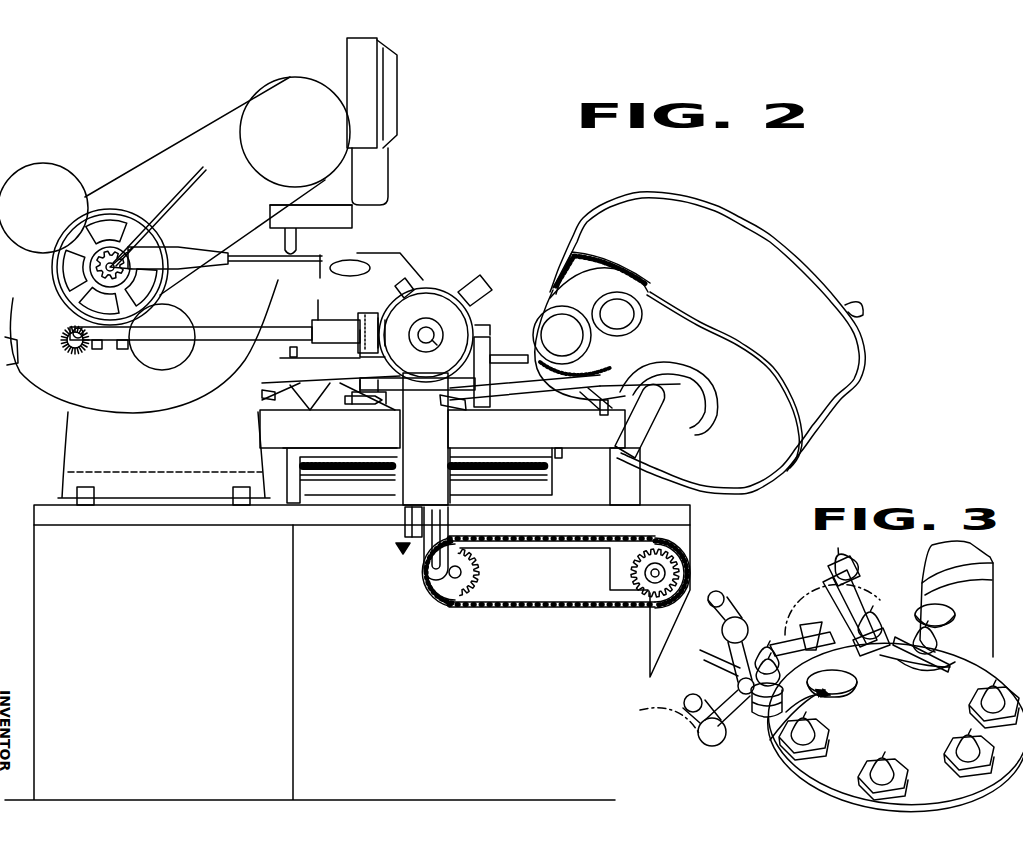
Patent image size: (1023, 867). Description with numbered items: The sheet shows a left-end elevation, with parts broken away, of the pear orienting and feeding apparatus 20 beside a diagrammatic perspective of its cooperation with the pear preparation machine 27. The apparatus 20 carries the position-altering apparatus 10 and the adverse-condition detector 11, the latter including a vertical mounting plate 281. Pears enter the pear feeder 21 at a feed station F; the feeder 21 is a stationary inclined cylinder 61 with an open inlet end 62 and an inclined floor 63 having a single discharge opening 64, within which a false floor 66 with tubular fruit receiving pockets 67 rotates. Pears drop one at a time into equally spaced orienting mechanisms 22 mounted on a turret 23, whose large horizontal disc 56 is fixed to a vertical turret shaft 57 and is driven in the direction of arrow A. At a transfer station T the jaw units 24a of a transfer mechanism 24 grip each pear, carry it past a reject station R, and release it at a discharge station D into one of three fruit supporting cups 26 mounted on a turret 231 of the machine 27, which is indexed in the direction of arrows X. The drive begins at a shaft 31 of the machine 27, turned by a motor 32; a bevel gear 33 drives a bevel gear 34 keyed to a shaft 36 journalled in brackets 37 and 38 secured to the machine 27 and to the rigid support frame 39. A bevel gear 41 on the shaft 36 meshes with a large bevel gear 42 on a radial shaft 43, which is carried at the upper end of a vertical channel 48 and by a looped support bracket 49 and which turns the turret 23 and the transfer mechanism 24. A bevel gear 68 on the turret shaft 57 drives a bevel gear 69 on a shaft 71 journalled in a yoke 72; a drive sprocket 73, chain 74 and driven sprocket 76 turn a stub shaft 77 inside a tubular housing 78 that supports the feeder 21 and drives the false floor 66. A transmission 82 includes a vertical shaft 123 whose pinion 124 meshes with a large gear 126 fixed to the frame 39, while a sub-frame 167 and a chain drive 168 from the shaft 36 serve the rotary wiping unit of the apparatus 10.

In FIG. 2, the position-altering apparatus 10 is at (520, 413).
In FIG. 2, the adverse-condition detector 11 is at (416, 287).
In FIG. 2, the pear orienting and feeding apparatus 20 is at (509, 282).
In FIG. 3, the pear orienting and feeding apparatus 20 is at (785, 772).
In FIG. 2, the pear feeder 21 is at (745, 210).
In FIG. 3, the pear feeder 21 is at (930, 548).
In FIG. 2, the orienting mechanisms 22 is at (262, 396).
In FIG. 3, the orienting mechanisms 22 is at (985, 707).
In FIG. 2, the turret 23 is at (272, 412).
In FIG. 3, the turret 23 is at (840, 783).
In FIG. 2, the transfer mechanism 24 is at (490, 278).
In FIG. 3, the transfer mechanism 24 is at (815, 600).
In FIG. 3, the jaw units 24a is at (842, 558).
In FIG. 2, the fruit supporting cups 26 is at (282, 384).
In FIG. 3, the fruit supporting cups 26 is at (716, 652).
In FIG. 2, the pear preparation machine 27 is at (155, 158).
In FIG. 2, the shaft 31 is at (62, 342).
In FIG. 2, the motor 32 is at (315, 202).
In FIG. 2, the bevel gear 33 is at (72, 331).
In FIG. 2, the bevel gear 34 is at (97, 350).
In FIG. 2, the shaft 36 is at (210, 342).
In FIG. 2, the bracket 37 is at (122, 350).
In FIG. 2, the bracket 38 is at (284, 322).
In FIG. 2, the support frame 39 is at (330, 525).
In FIG. 2, the bevel gear 41 is at (390, 333).
In FIG. 2, the bevel gear 42 is at (428, 290).
In FIG. 2, the shaft 43 is at (429, 342).
In FIG. 2, the channel 48 is at (409, 439).
In FIG. 2, the support bracket 49 is at (490, 330).
In FIG. 3, the disc 56 is at (846, 778).
In FIG. 2, the turret shaft 57 is at (400, 538).
In FIG. 2, the cylinder 61 is at (794, 280).
In FIG. 3, the cylinder 61 is at (972, 552).
In FIG. 2, the inlet end 62 is at (848, 312).
In FIG. 2, the floor 63 is at (722, 353).
In FIG. 3, the floor 63 is at (978, 583).
In FIG. 2, the discharge opening 64 is at (575, 370).
In FIG. 3, the discharge opening 64 is at (955, 613).
In FIG. 2, the false floor 66 is at (650, 286).
In FIG. 2, the fruit receiving pockets 67 is at (604, 305).
In FIG. 2, the bevel gear 68 is at (397, 549).
In FIG. 2, the bevel gear 69 is at (411, 569).
In FIG. 2, the shaft 71 is at (461, 571).
In FIG. 2, the yoke 72 is at (462, 549).
In FIG. 2, the drive sprocket 73 is at (420, 584).
In FIG. 2, the chain 74 is at (458, 607).
In FIG. 2, the driven sprocket 76 is at (645, 597).
In FIG. 2, the stub shaft 77 is at (648, 573).
In FIG. 2, the tubular housing 78 is at (622, 472).
In FIG. 2, the transmission 82 is at (350, 408).
In FIG. 2, the shaft 123 is at (361, 402).
In FIG. 2, the pinion 124 is at (382, 464).
In FIG. 2, the gear 126 is at (312, 462).
In FIG. 2, the sub-frame 167 is at (489, 352).
In FIG. 2, the chain drive 168 is at (366, 313).
In FIG. 3, the turret 231 is at (700, 705).
In FIG. 2, the mounting plate 281 is at (374, 262).
In FIG. 3, the arrow A is at (960, 690).
In FIG. 3, the discharge station D is at (768, 632).
In FIG. 2, the feed station F is at (612, 378).
In FIG. 3, the feed station F is at (950, 667).
In FIG. 3, the reject station R is at (883, 626).
In FIG. 3, the transfer station T is at (772, 726).
In FIG. 3, the arrows X is at (706, 682).